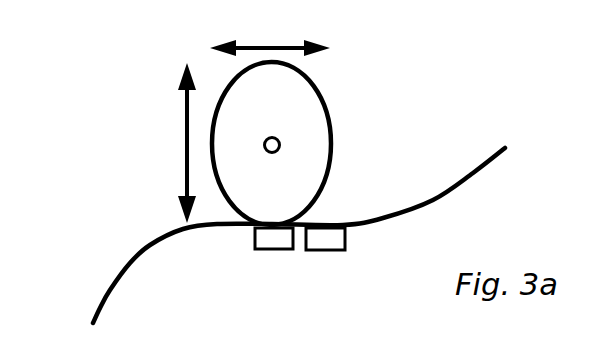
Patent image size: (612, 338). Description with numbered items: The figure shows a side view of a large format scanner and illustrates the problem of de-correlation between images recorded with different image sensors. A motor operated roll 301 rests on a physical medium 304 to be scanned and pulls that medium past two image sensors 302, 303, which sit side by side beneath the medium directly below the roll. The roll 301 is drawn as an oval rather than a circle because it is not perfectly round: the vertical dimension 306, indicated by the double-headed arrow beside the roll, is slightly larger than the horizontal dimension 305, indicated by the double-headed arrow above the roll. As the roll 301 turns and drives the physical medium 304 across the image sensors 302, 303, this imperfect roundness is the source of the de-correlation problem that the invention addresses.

The motor operated roll 301 is at (312, 143).
The image sensor 302 is at (240, 257).
The image sensor 303 is at (357, 263).
The physical medium 304 is at (279, 235).
The dimension of the roll 305 is at (311, 36).
The dimension of the roll 306 is at (150, 143).